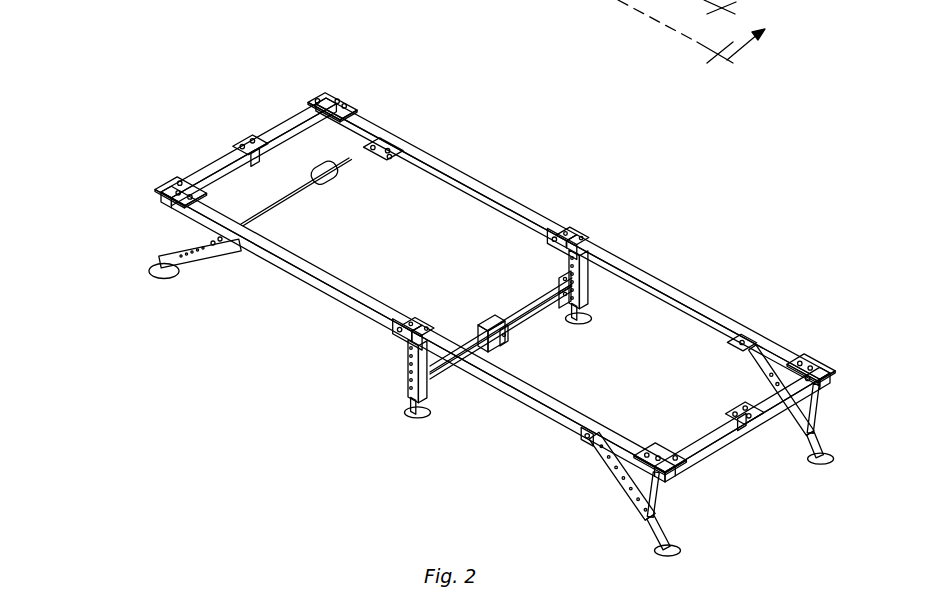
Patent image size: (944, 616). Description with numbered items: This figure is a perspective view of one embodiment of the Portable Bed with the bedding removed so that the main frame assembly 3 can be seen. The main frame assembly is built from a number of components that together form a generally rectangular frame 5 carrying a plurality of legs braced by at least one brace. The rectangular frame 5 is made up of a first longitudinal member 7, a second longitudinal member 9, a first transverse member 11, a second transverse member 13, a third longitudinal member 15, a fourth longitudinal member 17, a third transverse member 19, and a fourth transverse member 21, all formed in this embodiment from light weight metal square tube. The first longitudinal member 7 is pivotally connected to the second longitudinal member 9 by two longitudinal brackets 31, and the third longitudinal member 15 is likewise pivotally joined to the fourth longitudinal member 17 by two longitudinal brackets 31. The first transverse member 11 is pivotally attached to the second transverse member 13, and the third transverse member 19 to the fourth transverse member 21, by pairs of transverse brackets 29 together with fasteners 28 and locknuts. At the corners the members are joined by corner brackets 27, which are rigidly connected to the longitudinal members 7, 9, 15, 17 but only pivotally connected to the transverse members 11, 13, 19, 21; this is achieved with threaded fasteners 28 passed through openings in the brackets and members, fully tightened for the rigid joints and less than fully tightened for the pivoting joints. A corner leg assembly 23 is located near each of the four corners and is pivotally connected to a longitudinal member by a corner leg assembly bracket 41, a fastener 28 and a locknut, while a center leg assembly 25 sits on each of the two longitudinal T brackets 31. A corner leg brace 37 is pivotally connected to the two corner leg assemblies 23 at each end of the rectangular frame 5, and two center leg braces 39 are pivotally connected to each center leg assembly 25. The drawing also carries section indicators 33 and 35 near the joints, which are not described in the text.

The main frame assembly 3 is at (691, 31).
The rectangular frame 5 is at (148, 72).
The first longitudinal member 7 is at (372, 118).
The second longitudinal member 9 is at (681, 291).
The first transverse member 11 is at (780, 418).
The second transverse member 13 is at (711, 463).
The third longitudinal member 15 is at (536, 414).
The fourth longitudinal member 17 is at (337, 306).
The third transverse member 19 is at (190, 180).
The fourth transverse member 21 is at (286, 112).
The corner leg assembly 23 is at (412, 168).
The center leg assembly 25 is at (584, 283).
The corner bracket 27 is at (332, 94).
The fastener 28 is at (319, 94).
The transverse bracket 29 is at (248, 133).
The longitudinal bracket 31 is at (556, 240).
The rail joint 33 is at (577, 238).
The bracket tab 35 is at (232, 176).
The corner leg brace 37 is at (287, 203).
The center leg brace 39 is at (537, 291).
The corner leg assembly bracket 41 is at (592, 443).